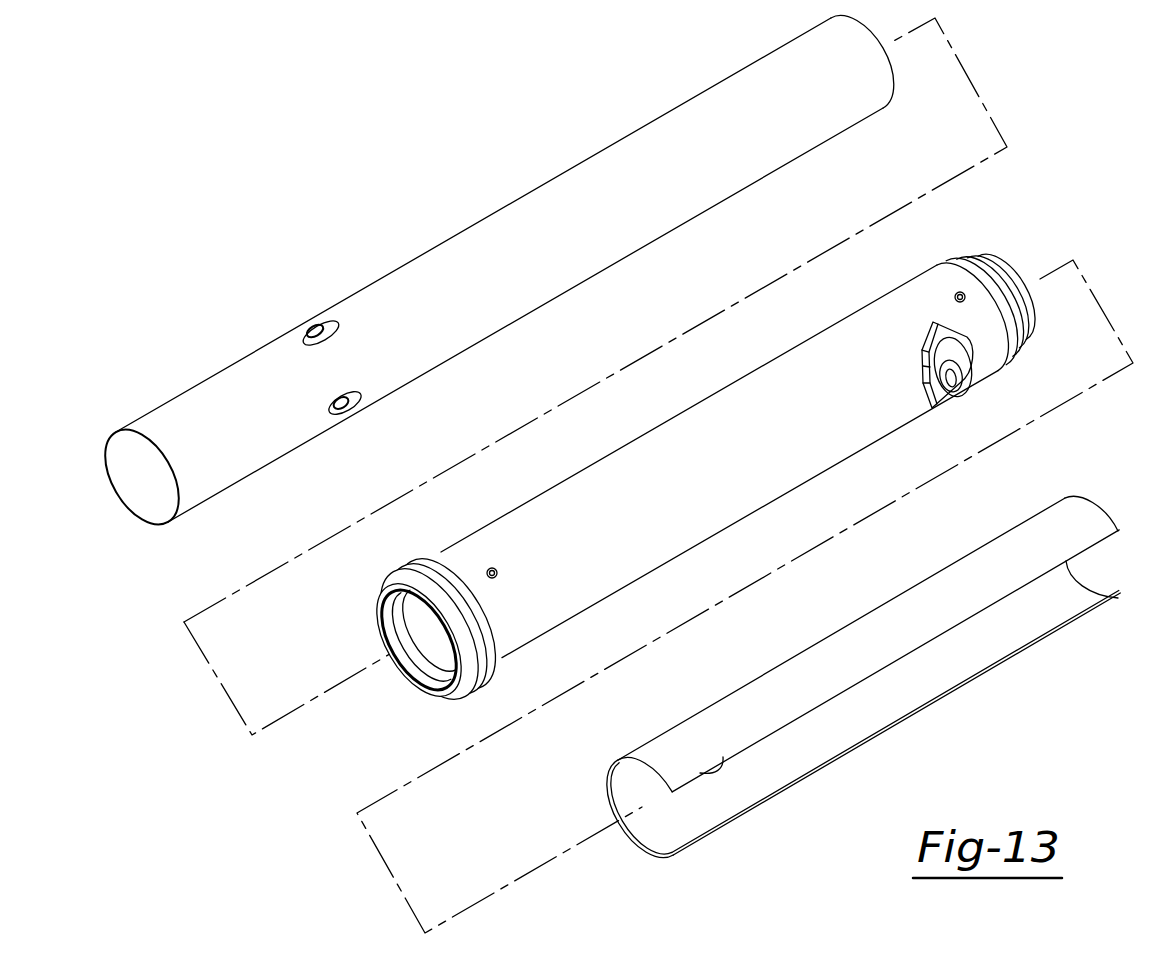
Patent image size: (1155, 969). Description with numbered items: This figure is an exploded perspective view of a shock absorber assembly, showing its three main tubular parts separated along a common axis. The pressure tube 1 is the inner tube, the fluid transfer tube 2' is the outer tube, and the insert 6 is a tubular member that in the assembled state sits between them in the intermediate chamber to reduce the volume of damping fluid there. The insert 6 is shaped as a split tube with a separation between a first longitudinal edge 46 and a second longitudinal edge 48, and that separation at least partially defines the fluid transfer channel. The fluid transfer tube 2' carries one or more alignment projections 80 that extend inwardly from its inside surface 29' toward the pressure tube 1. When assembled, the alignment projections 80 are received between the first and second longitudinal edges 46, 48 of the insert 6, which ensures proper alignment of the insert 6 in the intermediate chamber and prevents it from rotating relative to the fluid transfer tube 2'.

The pressure tube 1 is at (487, 265).
The fluid transfer tube 2' is at (738, 455).
The inside surface 29' is at (417, 629).
The alignment projections 80 is at (491, 567).
The insert 6 is at (872, 638).
The first longitudinal edge 46 is at (722, 760).
The second longitudinal edge 48 is at (1035, 647).